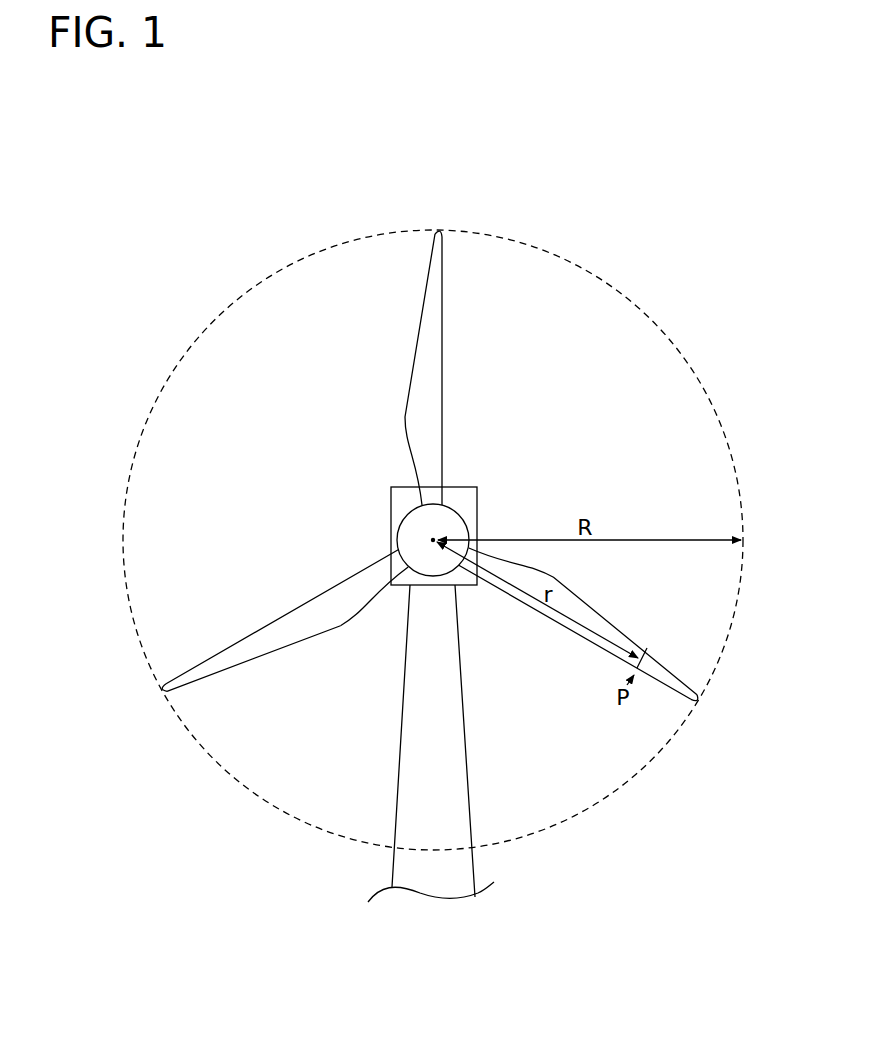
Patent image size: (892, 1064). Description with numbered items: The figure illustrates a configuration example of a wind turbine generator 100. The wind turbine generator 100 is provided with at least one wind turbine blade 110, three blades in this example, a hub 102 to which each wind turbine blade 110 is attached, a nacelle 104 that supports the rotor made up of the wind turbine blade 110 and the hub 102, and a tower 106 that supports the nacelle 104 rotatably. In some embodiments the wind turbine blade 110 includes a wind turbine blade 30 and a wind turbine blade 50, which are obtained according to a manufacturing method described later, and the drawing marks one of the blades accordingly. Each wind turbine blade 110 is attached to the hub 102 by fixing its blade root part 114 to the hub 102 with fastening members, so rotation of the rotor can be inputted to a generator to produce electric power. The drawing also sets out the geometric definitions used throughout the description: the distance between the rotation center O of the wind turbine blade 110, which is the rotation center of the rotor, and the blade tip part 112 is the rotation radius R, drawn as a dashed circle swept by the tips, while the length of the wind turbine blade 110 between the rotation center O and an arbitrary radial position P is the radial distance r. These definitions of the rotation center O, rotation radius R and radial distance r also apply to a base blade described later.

The wind turbine generator 100 is at (742, 313).
The hub 102 is at (452, 526).
The nacelle 104 is at (399, 486).
The tower 106 is at (465, 727).
The wind turbine blade 110 is at (456, 295).
The blade tip part 112 is at (437, 229).
The blade root part 114 is at (392, 563).
The wind turbine blade 30 is at (437, 485).
The wind turbine blade 50 is at (437, 485).